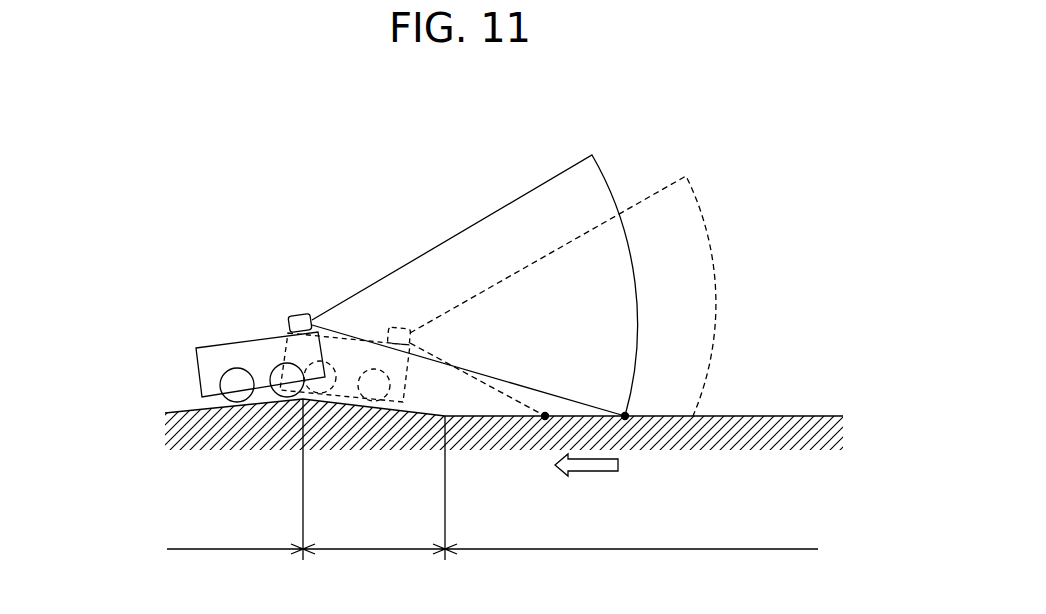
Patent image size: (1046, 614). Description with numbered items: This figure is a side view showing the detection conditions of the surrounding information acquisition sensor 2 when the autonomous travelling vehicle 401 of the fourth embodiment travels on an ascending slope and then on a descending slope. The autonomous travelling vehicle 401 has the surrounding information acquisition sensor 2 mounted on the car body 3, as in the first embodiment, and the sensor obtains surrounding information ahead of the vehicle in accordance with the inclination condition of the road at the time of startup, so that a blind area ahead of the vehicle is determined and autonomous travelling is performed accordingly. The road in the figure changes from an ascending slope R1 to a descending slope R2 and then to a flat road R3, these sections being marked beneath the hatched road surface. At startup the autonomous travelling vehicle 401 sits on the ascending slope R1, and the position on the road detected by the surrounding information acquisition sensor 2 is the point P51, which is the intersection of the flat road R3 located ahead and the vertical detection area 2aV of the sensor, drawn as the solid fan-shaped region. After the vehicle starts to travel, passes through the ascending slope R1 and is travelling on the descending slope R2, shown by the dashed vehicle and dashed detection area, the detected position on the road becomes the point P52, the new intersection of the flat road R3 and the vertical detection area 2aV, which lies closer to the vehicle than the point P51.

The autonomous travelling vehicle 401 is at (190, 332).
The car body 3 is at (257, 348).
The surrounding information acquisition sensor 2 is at (298, 316).
The vertical detection area 2aV is at (518, 222).
The point P51 is at (625, 416).
The point P52 is at (545, 416).
The ascending slope R1 is at (235, 536).
The descending slope R2 is at (374, 536).
The flat road R3 is at (631, 536).